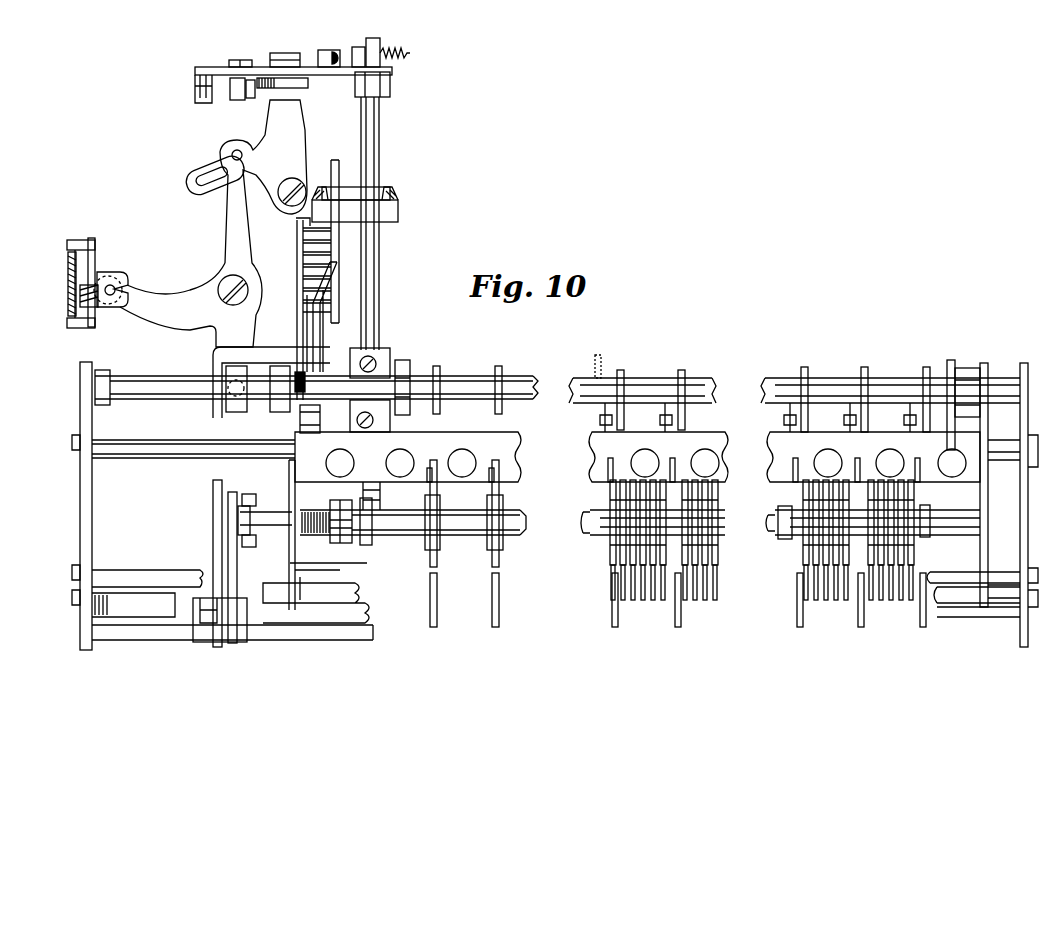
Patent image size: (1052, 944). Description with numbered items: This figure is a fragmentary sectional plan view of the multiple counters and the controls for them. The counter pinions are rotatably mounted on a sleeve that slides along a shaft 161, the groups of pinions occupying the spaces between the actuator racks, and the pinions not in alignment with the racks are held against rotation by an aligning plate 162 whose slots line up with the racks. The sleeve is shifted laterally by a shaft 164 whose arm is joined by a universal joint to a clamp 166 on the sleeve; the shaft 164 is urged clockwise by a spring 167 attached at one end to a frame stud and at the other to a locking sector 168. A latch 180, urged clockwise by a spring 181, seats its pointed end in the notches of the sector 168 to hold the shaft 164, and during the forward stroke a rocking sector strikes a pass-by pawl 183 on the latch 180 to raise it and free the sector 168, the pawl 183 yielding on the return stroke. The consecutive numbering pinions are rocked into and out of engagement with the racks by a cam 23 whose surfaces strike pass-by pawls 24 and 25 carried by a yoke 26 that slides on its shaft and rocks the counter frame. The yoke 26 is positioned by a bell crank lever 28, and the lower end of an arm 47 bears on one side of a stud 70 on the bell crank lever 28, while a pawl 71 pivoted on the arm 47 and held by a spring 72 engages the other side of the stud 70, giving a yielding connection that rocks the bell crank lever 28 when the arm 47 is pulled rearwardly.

The spring 181 is at (338, 50).
The spring 167 is at (410, 53).
The locking sector 168 is at (392, 88).
The pass-by pawl 183 is at (196, 86).
The latch 180 is at (335, 75).
The cam 23 is at (335, 256).
The shaft 164 is at (380, 302).
The pass-by pawl 25 is at (320, 304).
The pass-by pawl 24 is at (307, 372).
The yoke 26 is at (250, 352).
The bell crank lever 28 is at (162, 328).
The arm 47 is at (92, 260).
The stud 70 is at (118, 289).
The spring 72 is at (68, 287).
The pawl 71 is at (82, 322).
The clamp 166 is at (342, 506).
The aligning plate 162 is at (727, 478).
The shaft 161 is at (778, 535).